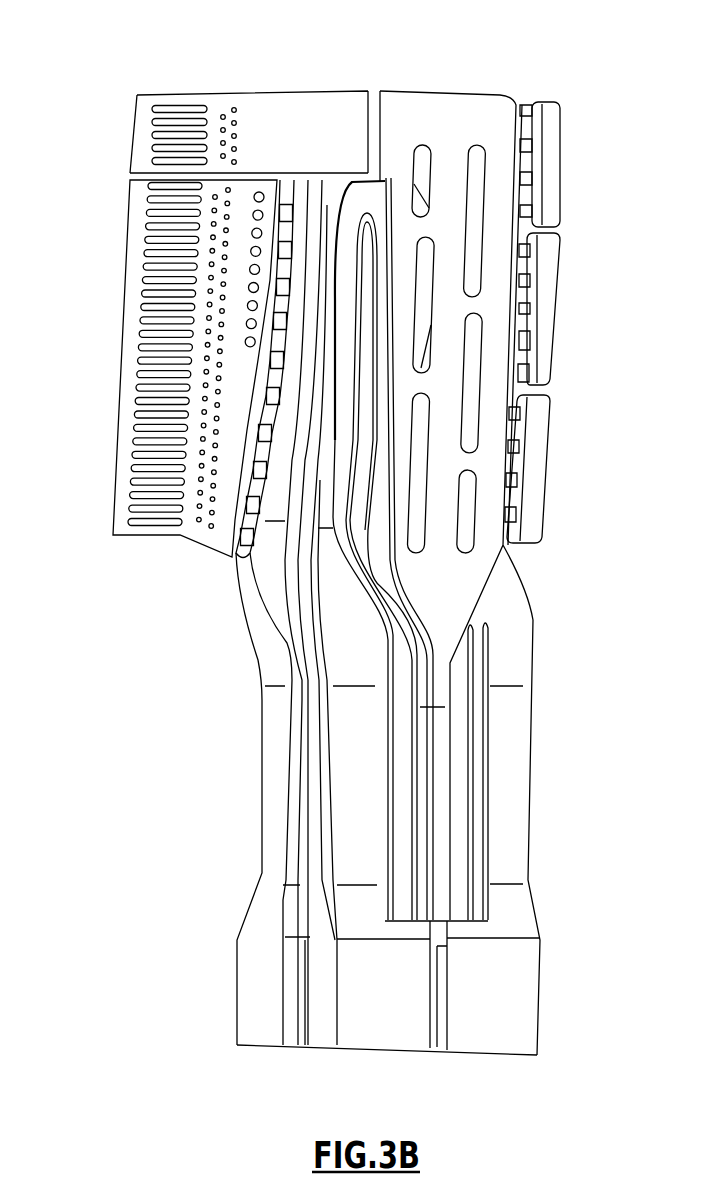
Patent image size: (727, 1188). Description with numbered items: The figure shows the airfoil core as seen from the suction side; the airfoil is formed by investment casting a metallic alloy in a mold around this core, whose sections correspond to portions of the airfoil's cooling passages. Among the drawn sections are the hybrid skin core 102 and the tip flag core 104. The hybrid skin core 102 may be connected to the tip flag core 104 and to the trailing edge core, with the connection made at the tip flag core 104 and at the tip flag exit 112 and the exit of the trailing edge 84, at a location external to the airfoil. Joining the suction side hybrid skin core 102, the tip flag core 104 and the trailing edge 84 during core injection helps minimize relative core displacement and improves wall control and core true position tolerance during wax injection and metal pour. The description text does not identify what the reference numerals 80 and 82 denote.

The housing assembly 80 is at (323, 91).
The connector blocks 82 is at (553, 342).
The trailing edge 84 is at (124, 337).
The hybrid skin core 102 is at (498, 110).
The tip flag core 104 is at (257, 110).
The tip flag exit 112 is at (130, 127).